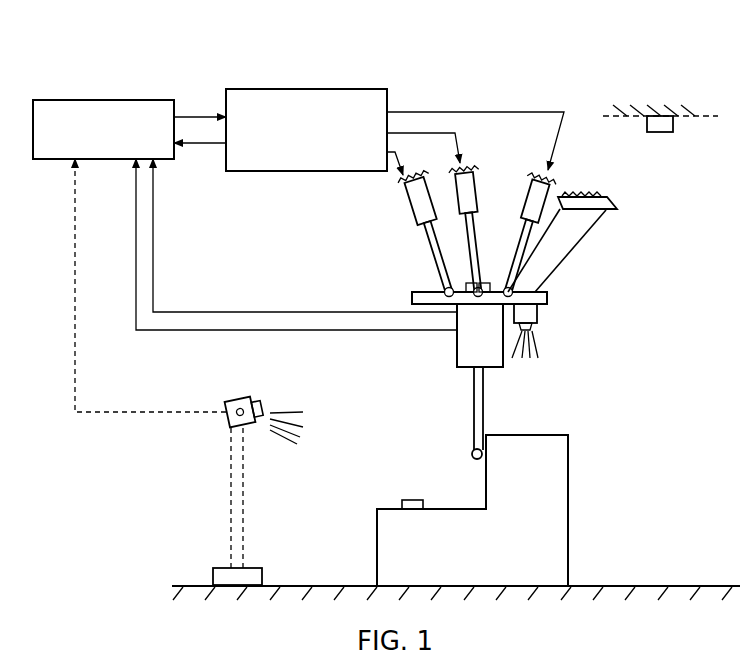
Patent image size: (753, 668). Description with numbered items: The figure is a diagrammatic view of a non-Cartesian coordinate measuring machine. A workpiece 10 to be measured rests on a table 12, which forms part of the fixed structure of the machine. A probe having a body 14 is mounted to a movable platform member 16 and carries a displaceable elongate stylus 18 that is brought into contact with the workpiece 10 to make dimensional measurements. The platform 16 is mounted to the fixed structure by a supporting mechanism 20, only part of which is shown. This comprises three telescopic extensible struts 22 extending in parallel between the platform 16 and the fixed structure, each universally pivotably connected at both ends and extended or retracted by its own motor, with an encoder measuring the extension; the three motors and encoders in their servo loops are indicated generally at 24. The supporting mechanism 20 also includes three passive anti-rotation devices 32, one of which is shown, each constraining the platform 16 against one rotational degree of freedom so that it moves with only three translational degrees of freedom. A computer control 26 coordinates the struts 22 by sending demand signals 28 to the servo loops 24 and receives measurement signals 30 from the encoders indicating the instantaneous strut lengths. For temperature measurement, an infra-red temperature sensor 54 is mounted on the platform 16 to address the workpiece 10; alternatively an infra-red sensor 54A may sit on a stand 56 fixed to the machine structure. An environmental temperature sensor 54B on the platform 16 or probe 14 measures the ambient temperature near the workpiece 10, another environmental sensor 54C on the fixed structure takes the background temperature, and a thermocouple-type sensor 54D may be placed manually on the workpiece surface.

The workpiece 10 is at (569, 514).
The table 12 is at (625, 585).
The probe body 14 is at (457, 343).
The movable platform member 16 is at (414, 292).
The stylus 18 is at (484, 388).
The supporting mechanism 20 is at (607, 276).
The telescopic extensible struts 22 is at (405, 205).
The motor and encoder servo loops 24 is at (308, 172).
The computer control 26 is at (103, 100).
The demand signals 28 is at (188, 116).
The measurement signals 30 is at (208, 144).
The passive anti-rotation device 32 is at (606, 221).
The infra-red temperature sensor 54 is at (538, 312).
The infra-red sensor 54A is at (244, 397).
The environmental temperature sensor 54B is at (485, 282).
The environmental temperature sensor 54C is at (661, 132).
The temperature sensor 54D is at (412, 500).
The bracket or stand 56 is at (230, 462).